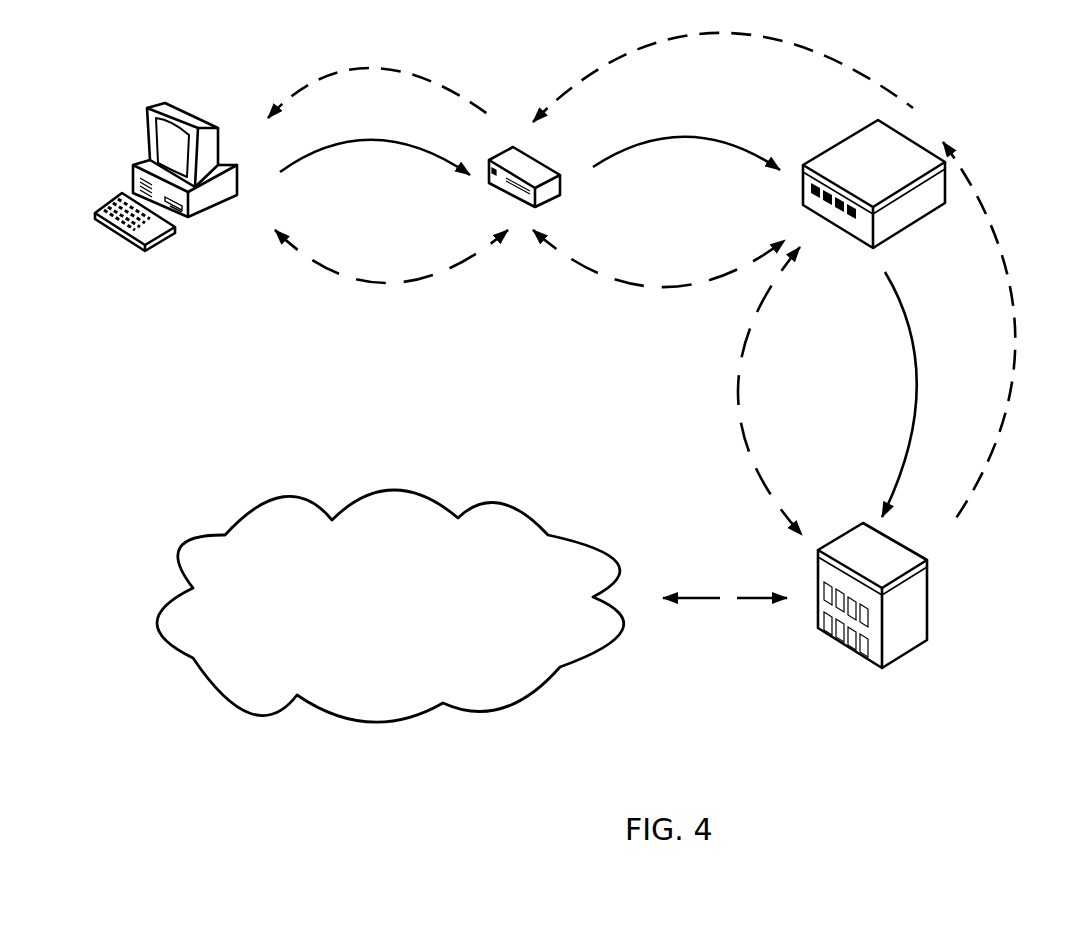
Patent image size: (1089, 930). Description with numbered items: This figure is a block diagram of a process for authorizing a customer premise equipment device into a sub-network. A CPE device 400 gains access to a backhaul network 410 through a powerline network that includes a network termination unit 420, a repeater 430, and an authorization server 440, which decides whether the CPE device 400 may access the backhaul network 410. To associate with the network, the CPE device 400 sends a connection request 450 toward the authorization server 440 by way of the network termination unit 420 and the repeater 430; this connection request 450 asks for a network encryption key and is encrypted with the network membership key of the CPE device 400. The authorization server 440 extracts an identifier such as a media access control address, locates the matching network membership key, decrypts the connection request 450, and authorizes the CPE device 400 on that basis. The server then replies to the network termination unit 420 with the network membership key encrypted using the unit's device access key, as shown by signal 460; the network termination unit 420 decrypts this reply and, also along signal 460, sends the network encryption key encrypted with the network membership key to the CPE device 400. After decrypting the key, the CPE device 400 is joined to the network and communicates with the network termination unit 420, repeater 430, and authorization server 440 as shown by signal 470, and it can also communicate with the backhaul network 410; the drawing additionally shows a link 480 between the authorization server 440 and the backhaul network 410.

The customer premise equipment device 400 is at (190, 105).
The backhaul network 410 is at (388, 487).
The network termination unit 420 is at (538, 157).
The repeater 430 is at (870, 120).
The authorization server 440 is at (922, 642).
The connection request 450 is at (378, 140).
The signal 460 is at (388, 68).
The signal 470 is at (430, 285).
The bidirectional link to backhaul network 480 is at (747, 597).